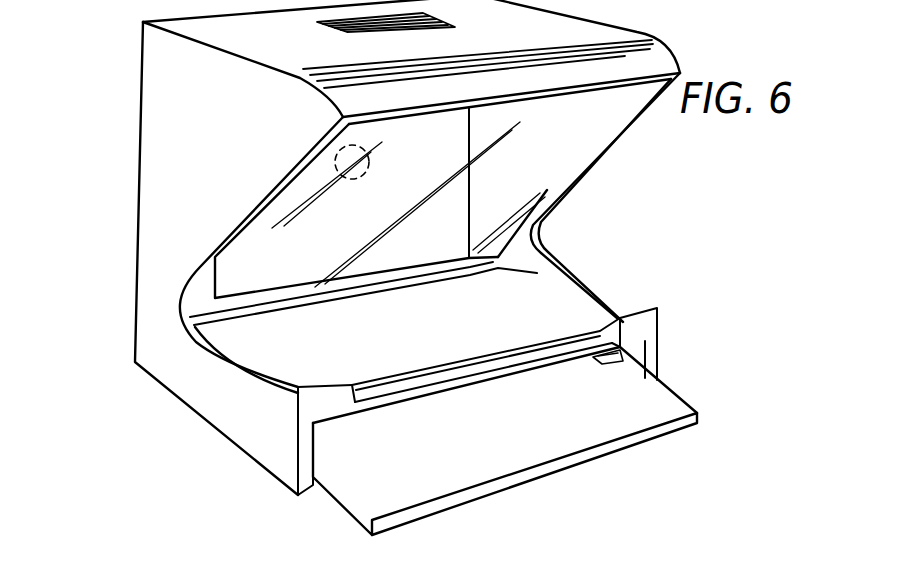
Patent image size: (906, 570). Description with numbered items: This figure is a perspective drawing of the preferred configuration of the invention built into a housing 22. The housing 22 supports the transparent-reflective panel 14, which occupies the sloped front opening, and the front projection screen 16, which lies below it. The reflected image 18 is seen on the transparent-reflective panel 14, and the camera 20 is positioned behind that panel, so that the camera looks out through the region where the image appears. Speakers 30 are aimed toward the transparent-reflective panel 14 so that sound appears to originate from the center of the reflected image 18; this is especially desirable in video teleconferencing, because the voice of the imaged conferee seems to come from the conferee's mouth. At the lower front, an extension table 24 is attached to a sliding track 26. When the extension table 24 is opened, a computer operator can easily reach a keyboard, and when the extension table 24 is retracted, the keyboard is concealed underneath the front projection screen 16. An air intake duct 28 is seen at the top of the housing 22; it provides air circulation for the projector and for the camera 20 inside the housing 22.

The transparent-reflective panel 14 is at (577, 152).
The front projection screen 16 is at (557, 318).
The reflected image 18 is at (469, 196).
The camera 20 is at (369, 160).
The housing 22 is at (588, 27).
The extension table 24 is at (653, 404).
The sliding track 26 is at (623, 356).
The air intake duct 28 is at (323, 25).
The speakers 30 is at (300, 386).